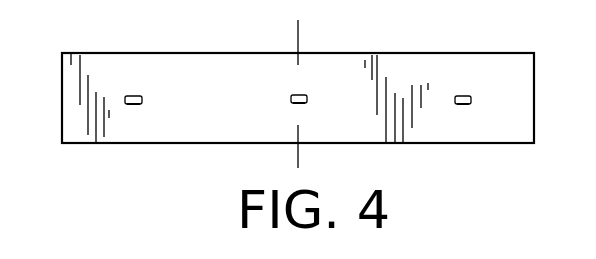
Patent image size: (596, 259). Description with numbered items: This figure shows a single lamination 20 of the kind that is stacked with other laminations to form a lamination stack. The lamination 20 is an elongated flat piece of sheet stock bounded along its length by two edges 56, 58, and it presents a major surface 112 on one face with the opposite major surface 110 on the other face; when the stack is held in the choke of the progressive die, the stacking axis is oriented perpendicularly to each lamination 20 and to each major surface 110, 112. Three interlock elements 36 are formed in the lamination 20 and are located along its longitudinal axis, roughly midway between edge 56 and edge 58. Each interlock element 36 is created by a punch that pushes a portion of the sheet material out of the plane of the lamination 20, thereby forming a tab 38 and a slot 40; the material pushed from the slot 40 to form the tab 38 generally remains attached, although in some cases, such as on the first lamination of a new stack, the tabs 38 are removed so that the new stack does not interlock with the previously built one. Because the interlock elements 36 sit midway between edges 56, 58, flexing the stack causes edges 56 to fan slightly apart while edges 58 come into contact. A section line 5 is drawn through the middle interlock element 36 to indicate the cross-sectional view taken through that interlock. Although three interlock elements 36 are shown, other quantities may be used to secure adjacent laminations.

The lamination 20 is at (413, 50).
The edge of lamination 56 is at (500, 52).
The edge of lamination 58 is at (524, 143).
The major surface 112 is at (223, 100).
The slot 40 is at (135, 95).
The interlock element 36 is at (133, 108).
The section line 5- 5 is at (298, 27).
The major surface 110 is at (595, 76).
The tab 38 is at (575, 132).